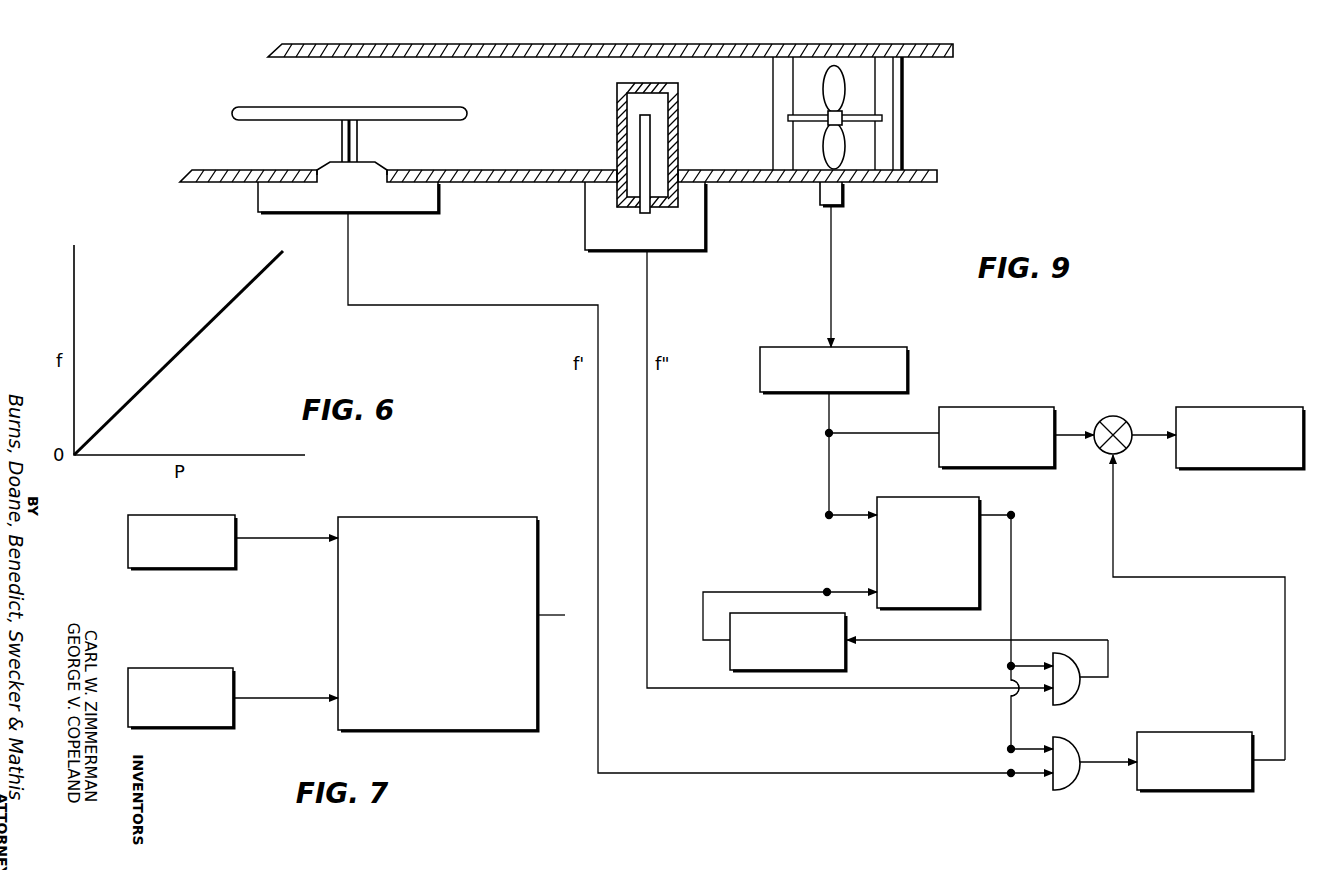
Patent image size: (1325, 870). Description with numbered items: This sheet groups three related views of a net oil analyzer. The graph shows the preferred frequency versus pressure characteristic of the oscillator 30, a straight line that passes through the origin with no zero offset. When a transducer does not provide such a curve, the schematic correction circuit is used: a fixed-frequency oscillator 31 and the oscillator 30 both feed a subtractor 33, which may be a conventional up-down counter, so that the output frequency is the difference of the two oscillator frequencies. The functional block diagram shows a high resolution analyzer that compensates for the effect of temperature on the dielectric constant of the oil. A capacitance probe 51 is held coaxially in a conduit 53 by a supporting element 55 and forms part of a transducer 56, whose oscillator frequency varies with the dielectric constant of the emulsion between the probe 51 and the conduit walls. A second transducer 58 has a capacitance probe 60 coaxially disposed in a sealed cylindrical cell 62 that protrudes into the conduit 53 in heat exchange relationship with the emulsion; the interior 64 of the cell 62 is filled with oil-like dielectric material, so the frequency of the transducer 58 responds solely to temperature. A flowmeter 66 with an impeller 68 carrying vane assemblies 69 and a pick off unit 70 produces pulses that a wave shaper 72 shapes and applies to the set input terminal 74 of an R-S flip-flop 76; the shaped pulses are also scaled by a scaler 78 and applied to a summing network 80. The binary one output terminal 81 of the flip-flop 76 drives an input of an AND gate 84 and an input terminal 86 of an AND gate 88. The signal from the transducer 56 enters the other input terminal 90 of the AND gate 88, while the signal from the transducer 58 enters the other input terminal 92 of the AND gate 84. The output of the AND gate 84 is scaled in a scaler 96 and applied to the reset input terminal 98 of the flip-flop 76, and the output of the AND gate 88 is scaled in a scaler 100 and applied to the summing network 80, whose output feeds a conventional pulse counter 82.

In FIG. 7, the oscillator 30 is at (158, 520).
In FIG. 7, the oscillator 31 is at (181, 686).
In FIG. 7, the subtractor 33 is at (372, 520).
In FIG. 9, the capacitance probe 51 is at (306, 106).
In FIG. 9, the conduit 53 is at (214, 185).
In FIG. 9, the supporting element 55 is at (352, 151).
In FIG. 9, the transducer 56 is at (398, 213).
In FIG. 9, the second transducer 58 is at (588, 222).
In FIG. 9, the capacitance probe 60 is at (652, 135).
In FIG. 9, the sealed cylindrical cell 62 is at (620, 126).
In FIG. 9, the interior of the cell 64 is at (634, 99).
In FIG. 9, the flowmeter 66 is at (848, 68).
In FIG. 9, the impeller 68 is at (835, 149).
In FIG. 9, the vane assemblies 69 is at (777, 132).
In FIG. 9, the pick off unit 70 is at (820, 204).
In FIG. 9, the wave shaper 72 is at (878, 356).
In FIG. 9, the set input terminal 74 is at (825, 517).
In FIG. 9, the R-S flip-flop 76 is at (877, 552).
In FIG. 9, the scaler 78 is at (990, 408).
In FIG. 9, the summing network 80 is at (1128, 419).
In FIG. 9, the binary 1 output terminal 81 is at (1013, 517).
In FIG. 9, the pulse counter 82 is at (1225, 408).
In FIG. 9, the AND gate 84 is at (1068, 690).
In FIG. 9, the input terminal 86 is at (1008, 750).
In FIG. 9, the AND gate 88 is at (1068, 775).
In FIG. 9, the input terminal 90 is at (1008, 775).
In FIG. 9, the input terminal 92 is at (1006, 690).
In FIG. 9, the scaler 96 is at (838, 658).
In FIG. 9, the reset input terminal 98 is at (826, 591).
In FIG. 9, the scaler 100 is at (1182, 734).